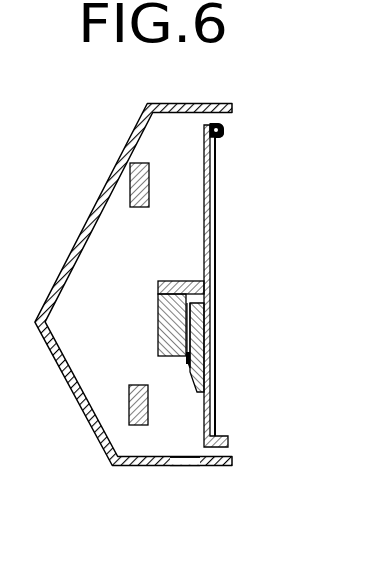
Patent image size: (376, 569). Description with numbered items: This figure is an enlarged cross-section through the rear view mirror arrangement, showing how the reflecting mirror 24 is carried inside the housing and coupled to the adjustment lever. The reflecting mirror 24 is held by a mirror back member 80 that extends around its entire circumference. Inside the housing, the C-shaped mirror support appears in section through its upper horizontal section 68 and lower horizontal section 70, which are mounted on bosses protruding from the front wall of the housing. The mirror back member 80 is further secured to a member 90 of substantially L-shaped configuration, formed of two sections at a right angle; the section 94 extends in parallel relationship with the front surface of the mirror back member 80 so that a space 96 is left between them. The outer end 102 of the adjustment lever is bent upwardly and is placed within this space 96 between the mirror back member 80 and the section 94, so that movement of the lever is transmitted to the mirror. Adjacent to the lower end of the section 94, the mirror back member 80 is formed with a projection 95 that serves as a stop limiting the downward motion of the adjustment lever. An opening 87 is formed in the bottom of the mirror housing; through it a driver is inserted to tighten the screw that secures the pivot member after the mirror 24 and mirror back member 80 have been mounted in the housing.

The reflecting mirror 24 is at (219, 170).
The upper horizontal section 68 is at (137, 190).
The lower horizontal section 70 is at (136, 425).
The mirror back member 80 is at (205, 197).
The opening 87 is at (188, 468).
The member 90 is at (162, 272).
The section 94 is at (170, 330).
The projection 95 is at (214, 394).
The space 96 is at (188, 366).
The outer end 102 is at (212, 320).